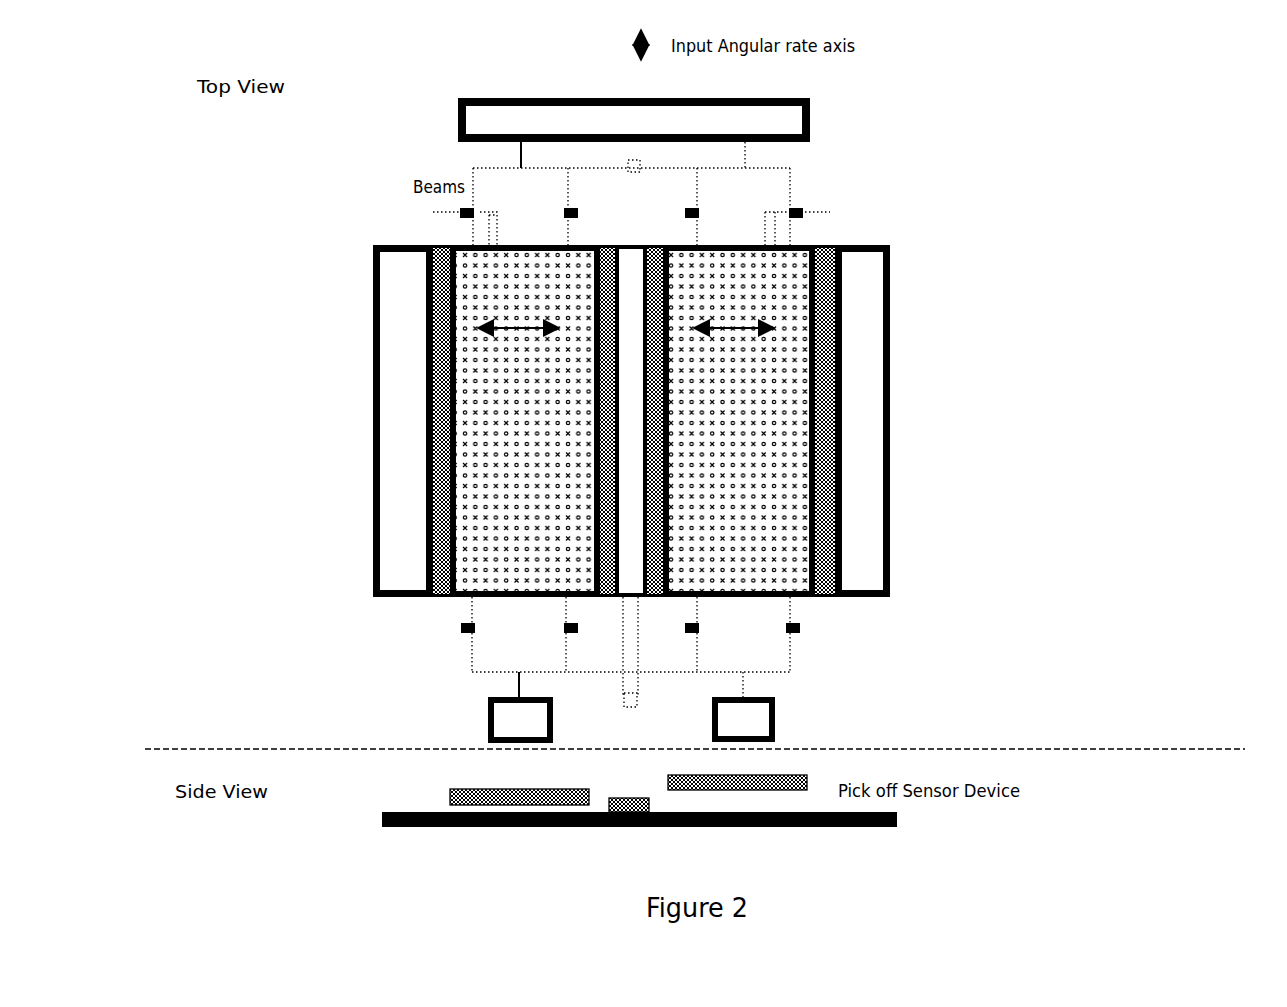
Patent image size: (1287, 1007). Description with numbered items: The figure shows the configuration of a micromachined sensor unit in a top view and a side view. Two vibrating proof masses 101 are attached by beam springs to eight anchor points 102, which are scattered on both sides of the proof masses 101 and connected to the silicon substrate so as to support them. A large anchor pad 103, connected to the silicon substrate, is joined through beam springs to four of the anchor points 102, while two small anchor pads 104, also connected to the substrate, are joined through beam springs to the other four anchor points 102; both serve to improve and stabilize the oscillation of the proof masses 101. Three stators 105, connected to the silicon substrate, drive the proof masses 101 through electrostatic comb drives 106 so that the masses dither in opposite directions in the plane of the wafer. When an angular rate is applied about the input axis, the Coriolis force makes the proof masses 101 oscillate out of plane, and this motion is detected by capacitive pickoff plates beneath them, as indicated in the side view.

The proof mass 101 is at (631, 526).
The anchor point 102 is at (709, 210).
The large anchor pad 103 is at (710, 120).
The small anchor pad 104 is at (712, 720).
The stator 105 is at (632, 407).
The comb drive 106 is at (431, 602).